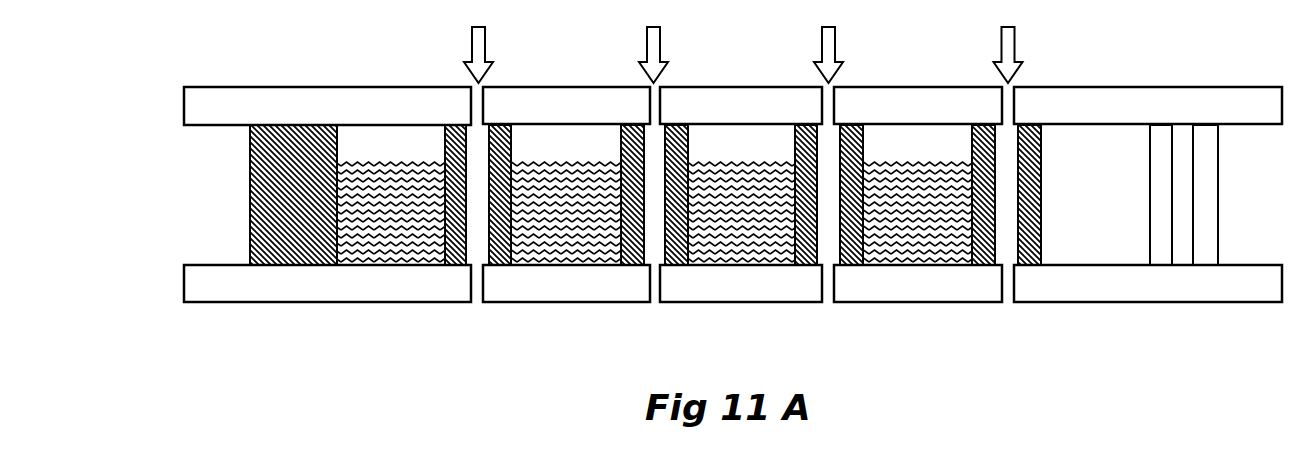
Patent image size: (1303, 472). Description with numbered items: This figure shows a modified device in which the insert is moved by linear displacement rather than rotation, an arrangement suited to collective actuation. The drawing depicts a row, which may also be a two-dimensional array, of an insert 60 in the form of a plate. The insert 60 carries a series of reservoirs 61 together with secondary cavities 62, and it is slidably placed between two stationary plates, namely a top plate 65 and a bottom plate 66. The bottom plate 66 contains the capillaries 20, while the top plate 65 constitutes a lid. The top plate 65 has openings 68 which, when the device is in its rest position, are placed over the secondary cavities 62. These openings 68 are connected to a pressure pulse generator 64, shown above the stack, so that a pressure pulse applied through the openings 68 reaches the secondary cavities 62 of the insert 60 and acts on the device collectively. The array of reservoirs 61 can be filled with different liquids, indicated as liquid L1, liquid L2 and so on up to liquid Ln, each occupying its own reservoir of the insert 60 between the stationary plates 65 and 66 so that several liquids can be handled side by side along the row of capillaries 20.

The capillaries 20 is at (472, 302).
The insert 60 is at (305, 187).
The reservoirs 61 is at (378, 220).
The secondary cavities 62 is at (1002, 228).
The pressure pulse generator 64 is at (472, 43).
The top plate 65 is at (221, 113).
The bottom plate 66 is at (220, 290).
The openings 68 is at (1010, 86).
The liquid L1 is at (293, 249).
The liquid L2 is at (600, 227).
The liquid Ln is at (1093, 220).